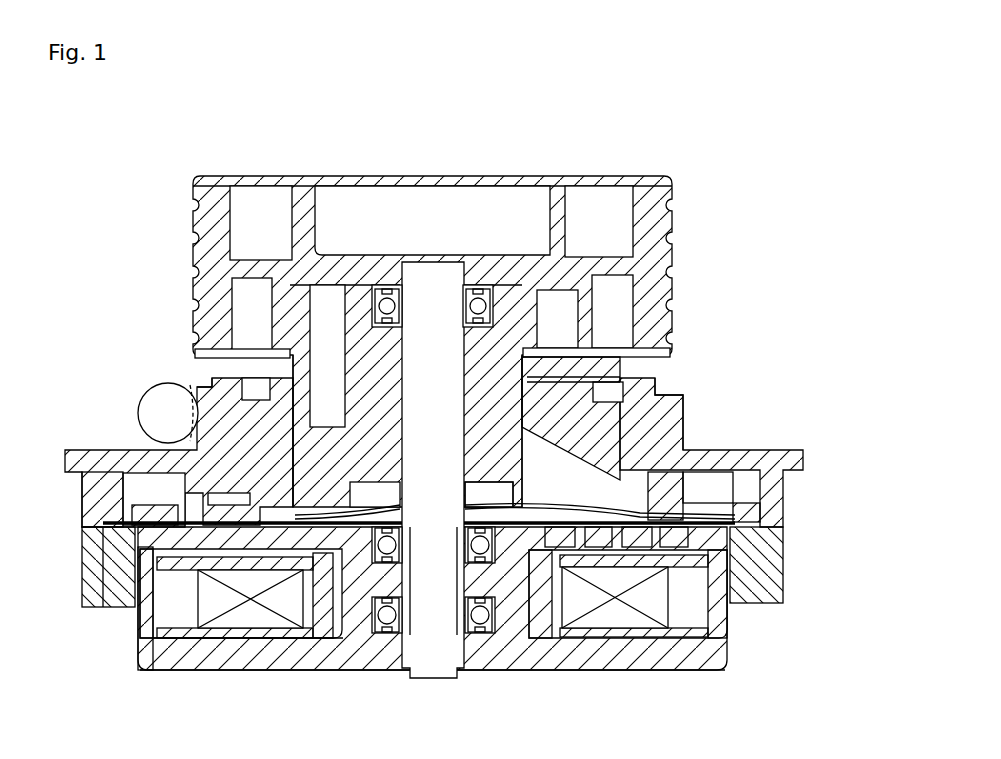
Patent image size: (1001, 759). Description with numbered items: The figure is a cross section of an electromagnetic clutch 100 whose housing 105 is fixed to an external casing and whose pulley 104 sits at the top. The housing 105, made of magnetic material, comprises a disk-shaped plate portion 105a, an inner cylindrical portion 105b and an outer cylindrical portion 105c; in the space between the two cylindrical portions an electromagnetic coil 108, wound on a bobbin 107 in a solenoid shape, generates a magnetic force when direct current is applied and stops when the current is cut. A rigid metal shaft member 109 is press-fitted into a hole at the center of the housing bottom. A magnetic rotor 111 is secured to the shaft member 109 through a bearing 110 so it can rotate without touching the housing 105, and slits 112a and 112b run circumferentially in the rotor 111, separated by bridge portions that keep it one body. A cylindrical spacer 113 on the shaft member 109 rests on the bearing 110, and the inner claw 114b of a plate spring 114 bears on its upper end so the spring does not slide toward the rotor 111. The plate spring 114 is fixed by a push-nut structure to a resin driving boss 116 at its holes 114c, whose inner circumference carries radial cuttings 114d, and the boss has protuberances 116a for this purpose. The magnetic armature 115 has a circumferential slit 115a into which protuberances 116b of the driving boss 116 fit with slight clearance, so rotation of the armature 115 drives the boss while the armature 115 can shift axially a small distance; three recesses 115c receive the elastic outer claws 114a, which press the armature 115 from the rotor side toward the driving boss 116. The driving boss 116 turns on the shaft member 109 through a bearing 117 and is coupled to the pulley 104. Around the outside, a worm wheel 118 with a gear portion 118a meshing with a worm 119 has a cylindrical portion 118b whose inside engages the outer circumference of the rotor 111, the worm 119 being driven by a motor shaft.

The electromagnetic clutch 100 is at (676, 362).
The pulley 104 is at (670, 176).
The housing 105 is at (138, 647).
The disk-shaped plate portion 105a is at (233, 660).
The inner cylindrical portion 105b is at (323, 617).
The outer cylindrical portion 105c is at (147, 623).
The bobbin 107 is at (268, 632).
The electromagnetic coil 108 is at (210, 598).
The shaft member 109 is at (440, 278).
The bearing 110 is at (368, 565).
The rotor 111 is at (728, 630).
The slit 112a is at (110, 530).
The slit 112b is at (717, 535).
The spacer 113 is at (458, 517).
The plate spring 114 is at (525, 503).
The outer claw 114a is at (640, 547).
The inner claw 114b is at (483, 507).
The hole 114c is at (645, 500).
The cutting 114d is at (598, 547).
The armature 115 is at (680, 503).
The slit 115a is at (720, 507).
The recess 115c is at (668, 547).
The driving boss 116 is at (550, 440).
The protuberance 116a is at (560, 547).
The protuberance 116b is at (660, 508).
The bearing 117 is at (486, 283).
The worm wheel 118 is at (108, 453).
The gear portion 118a is at (193, 380).
The cylindrical portion 118b is at (103, 508).
The worm 119 is at (158, 402).